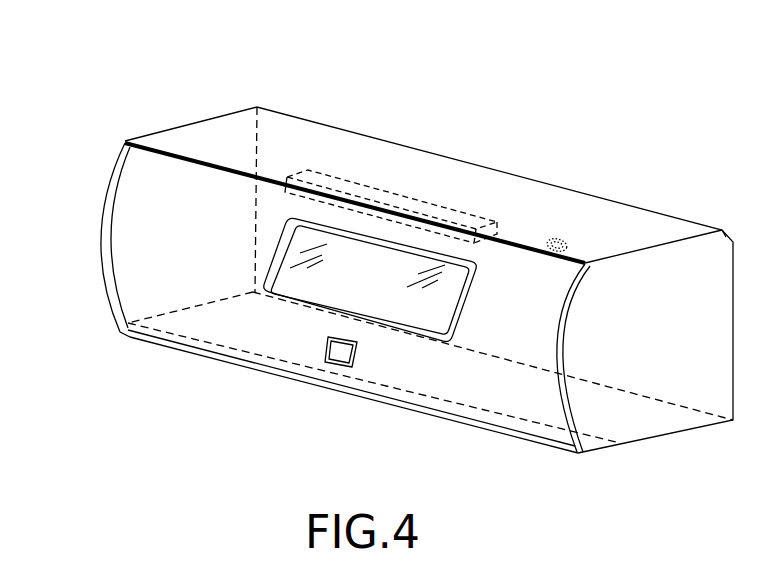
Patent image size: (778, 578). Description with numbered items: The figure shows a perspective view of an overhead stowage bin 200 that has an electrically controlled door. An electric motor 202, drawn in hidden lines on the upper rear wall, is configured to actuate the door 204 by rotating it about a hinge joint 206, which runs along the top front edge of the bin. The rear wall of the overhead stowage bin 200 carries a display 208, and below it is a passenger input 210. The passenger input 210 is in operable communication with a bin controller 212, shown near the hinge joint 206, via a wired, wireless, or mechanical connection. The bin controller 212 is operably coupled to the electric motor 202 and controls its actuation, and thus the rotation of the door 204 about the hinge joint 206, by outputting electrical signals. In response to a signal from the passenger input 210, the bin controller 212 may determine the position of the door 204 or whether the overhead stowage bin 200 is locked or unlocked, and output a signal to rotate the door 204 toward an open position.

The overhead stowage bin 200 is at (524, 109).
The electric motor 202 is at (472, 216).
The door 204 is at (190, 250).
The hinge joint 206 is at (205, 164).
The display 208 is at (376, 288).
The passenger input 210 is at (337, 352).
The bin controller 212 is at (562, 245).